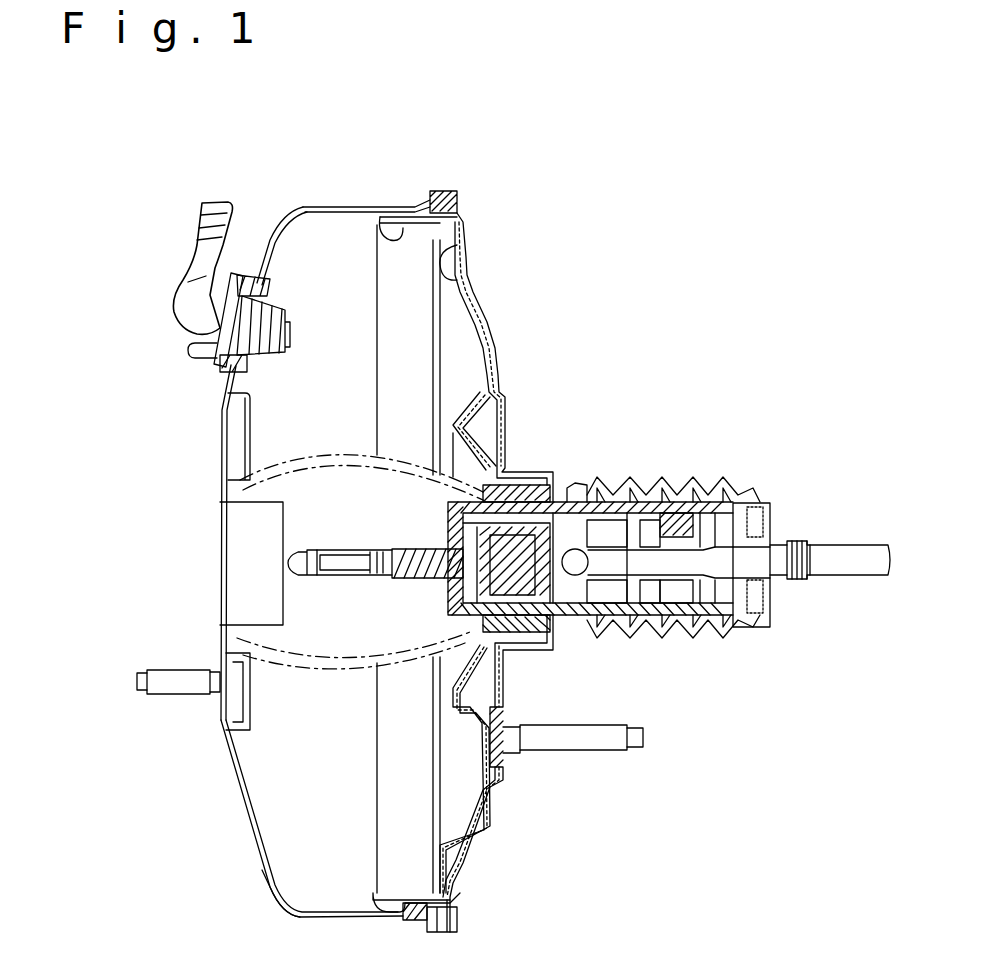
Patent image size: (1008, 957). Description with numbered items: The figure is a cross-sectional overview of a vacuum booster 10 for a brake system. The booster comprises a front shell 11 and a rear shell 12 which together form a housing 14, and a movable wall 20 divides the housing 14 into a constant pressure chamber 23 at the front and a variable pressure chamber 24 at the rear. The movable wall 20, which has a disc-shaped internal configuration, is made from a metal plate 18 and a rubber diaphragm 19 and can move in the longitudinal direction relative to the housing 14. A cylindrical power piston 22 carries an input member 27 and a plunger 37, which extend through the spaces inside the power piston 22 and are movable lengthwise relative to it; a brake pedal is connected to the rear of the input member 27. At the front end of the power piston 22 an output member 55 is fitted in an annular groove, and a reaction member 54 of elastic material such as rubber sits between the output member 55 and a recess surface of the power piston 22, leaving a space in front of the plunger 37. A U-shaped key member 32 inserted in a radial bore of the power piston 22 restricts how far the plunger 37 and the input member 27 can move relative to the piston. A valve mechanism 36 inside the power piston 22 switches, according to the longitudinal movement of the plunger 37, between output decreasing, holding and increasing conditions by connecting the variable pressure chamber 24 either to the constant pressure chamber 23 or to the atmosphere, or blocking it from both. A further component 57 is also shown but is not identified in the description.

The vacuum booster 10 is at (655, 284).
The front shell 11 is at (237, 777).
The rear shell 12 is at (477, 828).
The housing 14 is at (266, 888).
The plate 18 is at (435, 322).
The diaphragm 19 is at (366, 225).
The movable wall 20 is at (477, 302).
The power piston 22 is at (630, 488).
The constant pressure chamber 23 is at (267, 832).
The variable pressure chamber 24 is at (457, 847).
The input member 27 is at (748, 615).
The key member 32 is at (548, 622).
The valve mechanism 36 is at (657, 637).
The plunger 37 is at (577, 487).
The reaction member 54 is at (443, 538).
The output member 55 is at (440, 579).
The bracket 57 is at (221, 442).